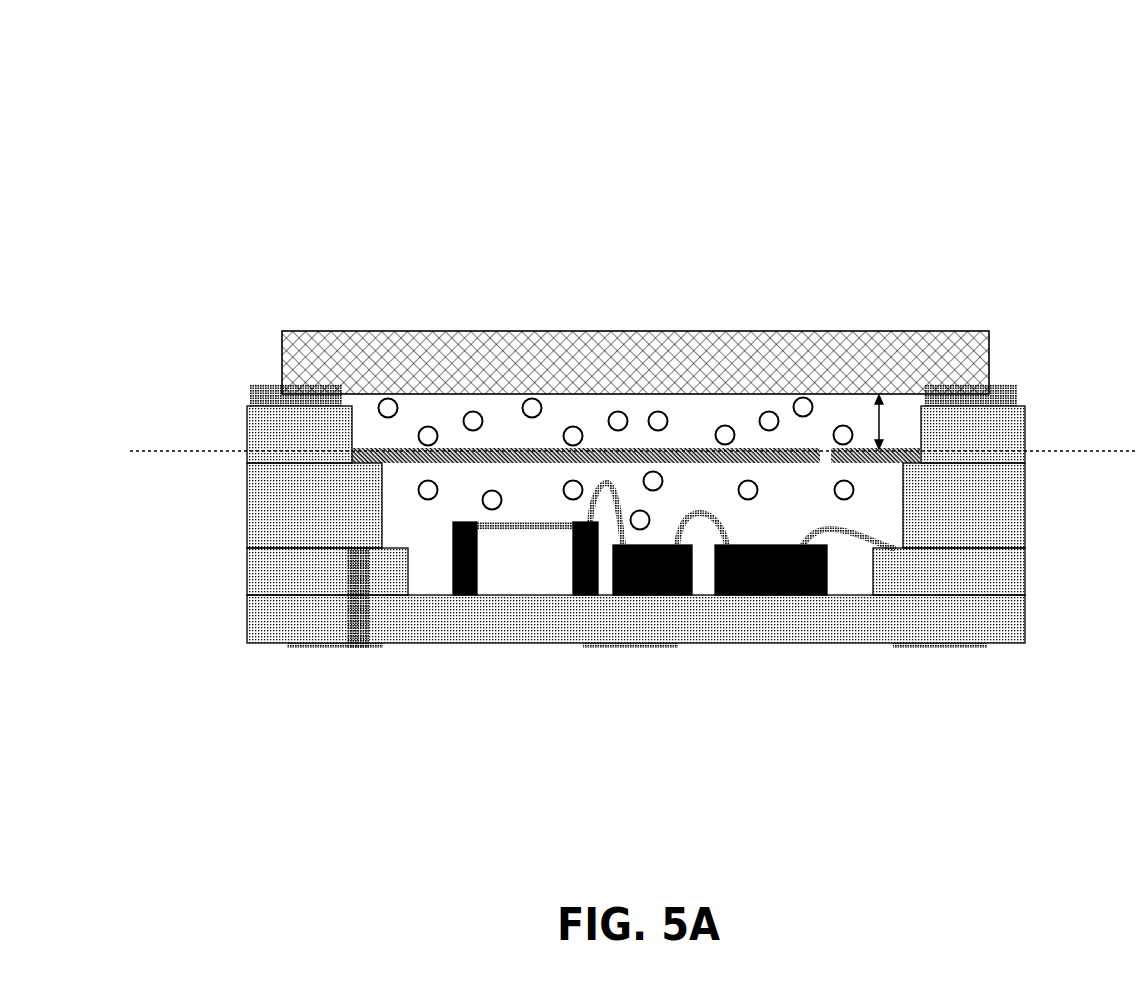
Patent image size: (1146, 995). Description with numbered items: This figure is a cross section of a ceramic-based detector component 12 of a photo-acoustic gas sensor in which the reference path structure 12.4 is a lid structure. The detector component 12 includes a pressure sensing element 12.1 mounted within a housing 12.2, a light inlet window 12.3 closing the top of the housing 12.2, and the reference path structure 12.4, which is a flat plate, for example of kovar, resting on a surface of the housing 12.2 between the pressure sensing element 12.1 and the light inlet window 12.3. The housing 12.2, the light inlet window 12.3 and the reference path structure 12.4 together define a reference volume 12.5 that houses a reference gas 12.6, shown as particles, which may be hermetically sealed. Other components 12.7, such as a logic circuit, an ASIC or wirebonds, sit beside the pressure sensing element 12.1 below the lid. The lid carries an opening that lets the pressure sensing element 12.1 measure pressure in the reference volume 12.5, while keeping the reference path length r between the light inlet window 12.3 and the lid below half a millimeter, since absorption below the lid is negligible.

The detector component 12 is at (128, 48).
The pressure sensing element 12.1 is at (552, 563).
The housing 12.2 is at (255, 437).
The light inlet window 12.3 is at (658, 378).
The reference path structure 12.4 is at (697, 460).
The reference volume 12.5 is at (744, 425).
The reference gas 12.6 is at (472, 420).
The other components 12.7 is at (768, 595).